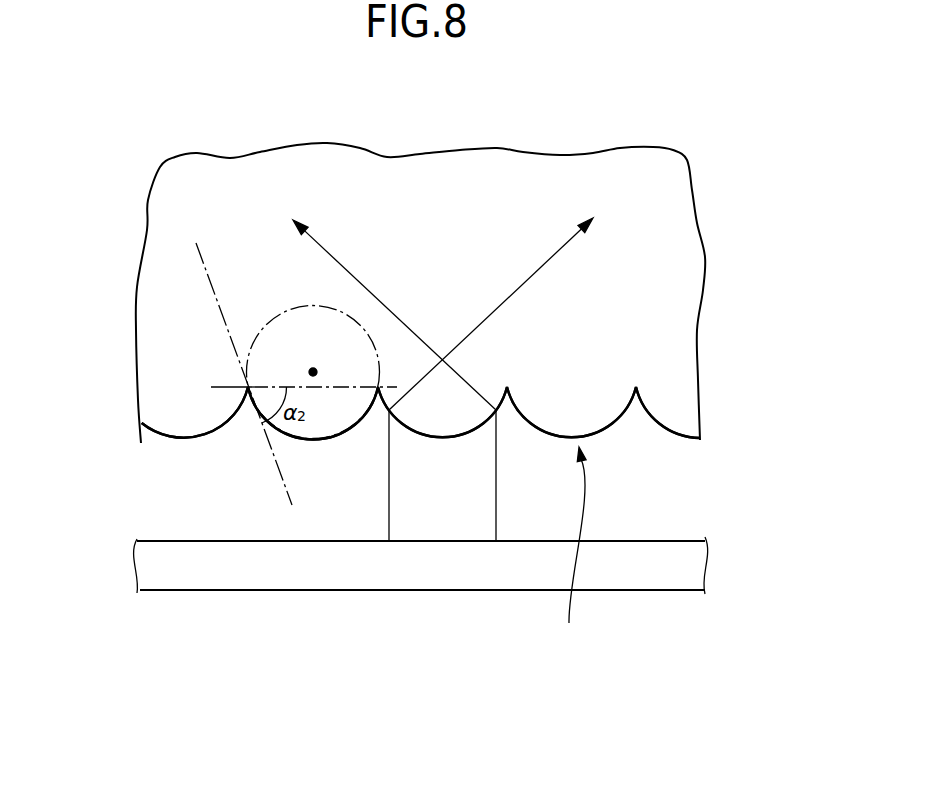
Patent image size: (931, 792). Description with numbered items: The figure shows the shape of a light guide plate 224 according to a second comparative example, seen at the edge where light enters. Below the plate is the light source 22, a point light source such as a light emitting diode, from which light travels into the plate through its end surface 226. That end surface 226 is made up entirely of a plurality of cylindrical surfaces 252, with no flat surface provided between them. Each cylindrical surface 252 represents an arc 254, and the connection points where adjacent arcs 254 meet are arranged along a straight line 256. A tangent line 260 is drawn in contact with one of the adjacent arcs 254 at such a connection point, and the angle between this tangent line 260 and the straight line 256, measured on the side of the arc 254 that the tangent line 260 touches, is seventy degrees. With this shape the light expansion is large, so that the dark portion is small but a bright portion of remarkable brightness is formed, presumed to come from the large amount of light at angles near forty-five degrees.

The light source 22 is at (263, 577).
The light guide plate 224 is at (515, 173).
The end surface 226 is at (570, 553).
The cylindrical surface 252 is at (180, 438).
The arc 254 is at (421, 413).
The straight line 256 is at (218, 385).
The tangent line 260 is at (282, 482).